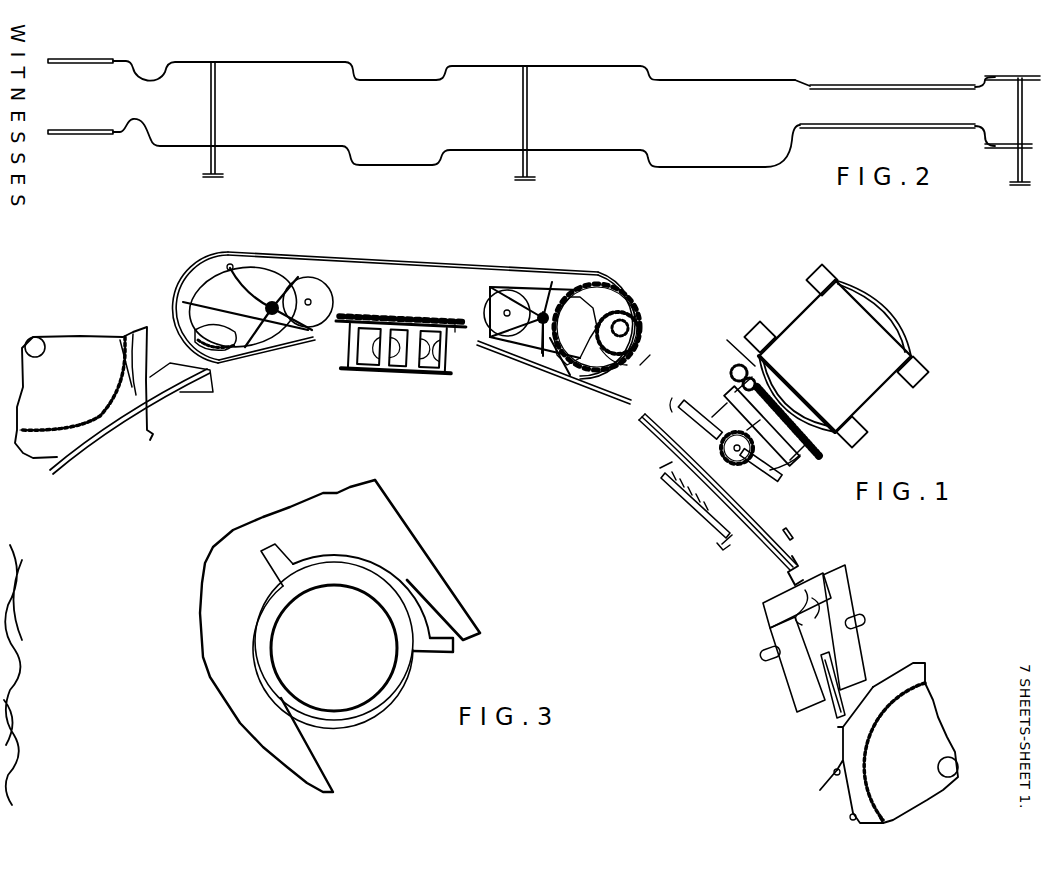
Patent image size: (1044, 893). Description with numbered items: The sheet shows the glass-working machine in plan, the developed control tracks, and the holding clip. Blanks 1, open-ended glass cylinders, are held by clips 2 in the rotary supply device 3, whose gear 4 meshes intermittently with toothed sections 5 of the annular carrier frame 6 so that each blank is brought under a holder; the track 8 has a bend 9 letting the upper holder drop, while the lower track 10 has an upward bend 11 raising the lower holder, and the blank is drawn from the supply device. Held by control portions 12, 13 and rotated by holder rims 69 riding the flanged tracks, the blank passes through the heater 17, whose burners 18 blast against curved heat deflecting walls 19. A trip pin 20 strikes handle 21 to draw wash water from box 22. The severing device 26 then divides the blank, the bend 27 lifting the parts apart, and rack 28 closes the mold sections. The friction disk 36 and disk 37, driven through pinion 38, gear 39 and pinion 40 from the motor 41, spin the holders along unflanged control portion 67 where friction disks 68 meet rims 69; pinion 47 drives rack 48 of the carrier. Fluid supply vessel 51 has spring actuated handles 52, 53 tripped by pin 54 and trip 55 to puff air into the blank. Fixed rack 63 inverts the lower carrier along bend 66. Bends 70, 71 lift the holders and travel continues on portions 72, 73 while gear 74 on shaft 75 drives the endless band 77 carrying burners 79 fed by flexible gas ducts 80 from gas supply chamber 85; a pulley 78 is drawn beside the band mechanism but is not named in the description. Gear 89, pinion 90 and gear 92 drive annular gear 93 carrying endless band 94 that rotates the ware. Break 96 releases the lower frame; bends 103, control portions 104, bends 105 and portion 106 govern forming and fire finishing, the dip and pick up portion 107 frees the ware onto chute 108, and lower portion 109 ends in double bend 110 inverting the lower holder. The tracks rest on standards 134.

In FIG. 1, the blank 1 is at (142, 345).
In FIG. 3, the blank 1 is at (400, 688).
In FIG. 3, the clips 2 is at (440, 652).
In FIG. 1, the rotary supply device 3 is at (143, 400).
In FIG. 3, the rotary supply device 3 is at (467, 605).
In FIG. 1, the gear 4 is at (60, 448).
In FIG. 1, the toothed sections 5 is at (430, 318).
In FIG. 1, the annular carrier frame 6 is at (345, 372).
In FIG. 2, the track 8 is at (70, 60).
In FIG. 2, the bend 9 is at (976, 78).
In FIG. 2, the lower track 10 is at (60, 133).
In FIG. 2, the upward bend 11 is at (978, 143).
In FIG. 2, the control portion of track 12 is at (905, 87).
In FIG. 1, the control portion of track 12 is at (846, 672).
In FIG. 2, the control portion of track 13 is at (885, 128).
In FIG. 1, the heater 17 is at (850, 642).
In FIG. 1, the burners 18 is at (790, 665).
In FIG. 1, the heat deflecting walls 19 is at (822, 612).
In FIG. 1, the trip pin 20 is at (425, 318).
In FIG. 1, the handle 21 is at (812, 605).
In FIG. 1, the box 22 is at (757, 627).
In FIG. 1, the severing device 26 is at (825, 585).
In FIG. 2, the bend 27 is at (808, 82).
In FIG. 1, the bend 27 is at (757, 550).
In FIG. 1, the rack 28 is at (802, 578).
In FIG. 1, the friction disk 36 is at (743, 478).
In FIG. 1, the friction disk 37 is at (727, 404).
In FIG. 1, the pinion 38 is at (744, 384).
In FIG. 1, the gear 39 is at (733, 366).
In FIG. 1, the pinion 40 is at (761, 387).
In FIG. 1, the motor 41 is at (780, 326).
In FIG. 1, the pinion 47 is at (780, 478).
In FIG. 1, the rack 48 is at (455, 322).
In FIG. 1, the fluid supply vessel 51 is at (700, 525).
In FIG. 1, the spring actuated handle 52 is at (713, 560).
In FIG. 1, the spring actuated handle 53 is at (672, 502).
In FIG. 1, the pin 54 is at (360, 376).
In FIG. 1, the trip 55 is at (386, 376).
In FIG. 1, the fixed rack 63 is at (790, 532).
In FIG. 2, the bend 66 is at (785, 148).
In FIG. 2, the control portion of track 67 is at (750, 80).
In FIG. 1, the control portion of track 67 is at (683, 452).
In FIG. 1, the friction disks 68 is at (396, 392).
In FIG. 1, the holder rims 69 is at (330, 388).
In FIG. 2, the bend 70 is at (645, 70).
In FIG. 1, the bend 70 is at (613, 407).
In FIG. 2, the bend 71 is at (640, 162).
In FIG. 2, the portion of control track 72 is at (580, 66).
In FIG. 2, the portion of control track 73 is at (575, 152).
In FIG. 1, the gear 74 is at (572, 378).
In FIG. 1, the shaft 75 is at (594, 327).
In FIG. 1, the endless band 77 is at (530, 360).
In FIG. 1, the pulley 78 is at (486, 356).
In FIG. 1, the burners 79 is at (190, 268).
In FIG. 1, the flexible gas ducts 80 is at (274, 300).
In FIG. 1, the gas supply chamber 85 is at (679, 397).
In FIG. 1, the gear 89 is at (640, 352).
In FIG. 1, the pinion 90 is at (655, 323).
In FIG. 1, the gear 92 is at (655, 308).
In FIG. 1, the annular gear 93 is at (645, 290).
In FIG. 1, the endless band 94 is at (430, 262).
In FIG. 2, the break 96 is at (663, 82).
In FIG. 1, the break 96 is at (643, 416).
In FIG. 2, the bends 103 is at (442, 68).
In FIG. 2, the control portions 104 is at (403, 77).
In FIG. 2, the bends 105 is at (345, 68).
In FIG. 2, the portion of upper track 106 is at (245, 62).
In FIG. 2, the dip and pick up portion 107 is at (140, 80).
In FIG. 1, the chute 108 is at (180, 392).
In FIG. 2, the portion of lower track 109 is at (220, 150).
In FIG. 2, the double bend 110 is at (155, 135).
In FIG. 2, the standards 134 is at (207, 162).